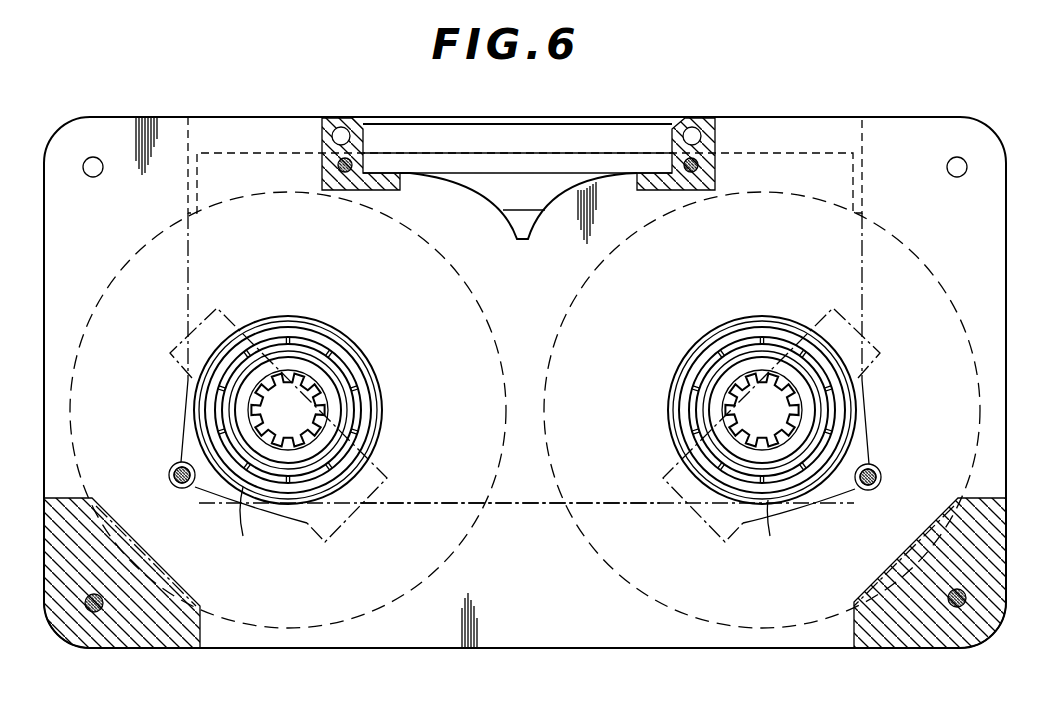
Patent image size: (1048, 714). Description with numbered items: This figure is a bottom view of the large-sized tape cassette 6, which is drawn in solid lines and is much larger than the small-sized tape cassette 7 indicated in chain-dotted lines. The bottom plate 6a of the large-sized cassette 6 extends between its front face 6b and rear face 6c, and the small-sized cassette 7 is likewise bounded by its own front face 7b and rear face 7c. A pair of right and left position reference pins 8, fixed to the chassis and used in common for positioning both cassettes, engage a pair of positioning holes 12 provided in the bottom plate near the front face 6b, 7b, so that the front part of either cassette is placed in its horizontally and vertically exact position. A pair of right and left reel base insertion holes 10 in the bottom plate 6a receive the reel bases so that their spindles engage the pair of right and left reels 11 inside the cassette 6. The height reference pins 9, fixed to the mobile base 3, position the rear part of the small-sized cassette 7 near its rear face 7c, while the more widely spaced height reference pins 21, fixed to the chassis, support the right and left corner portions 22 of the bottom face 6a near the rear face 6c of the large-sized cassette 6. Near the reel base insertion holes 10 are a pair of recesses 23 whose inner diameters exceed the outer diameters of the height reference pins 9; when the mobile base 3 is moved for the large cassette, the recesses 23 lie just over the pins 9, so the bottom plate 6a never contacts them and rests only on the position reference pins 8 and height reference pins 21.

The mobile base 3 is at (332, 528).
The large-sized tape cassette 6 is at (637, 649).
The bottom plate 6a is at (551, 630).
The front face 6b is at (255, 117).
The rear face 6c is at (364, 648).
The small-sized tape cassette 7 is at (531, 504).
The front face 7b is at (501, 124).
The rear face 7c is at (510, 507).
The position reference pin 8 is at (370, 125).
The height reference pin 9 is at (186, 490).
The reel base insertion hole 10 is at (510, 527).
The reel 11 is at (362, 417).
The positioning hole 12 is at (345, 127).
The height reference pin 21 is at (96, 612).
The corner portion 22 is at (70, 622).
The recess 23 is at (173, 489).